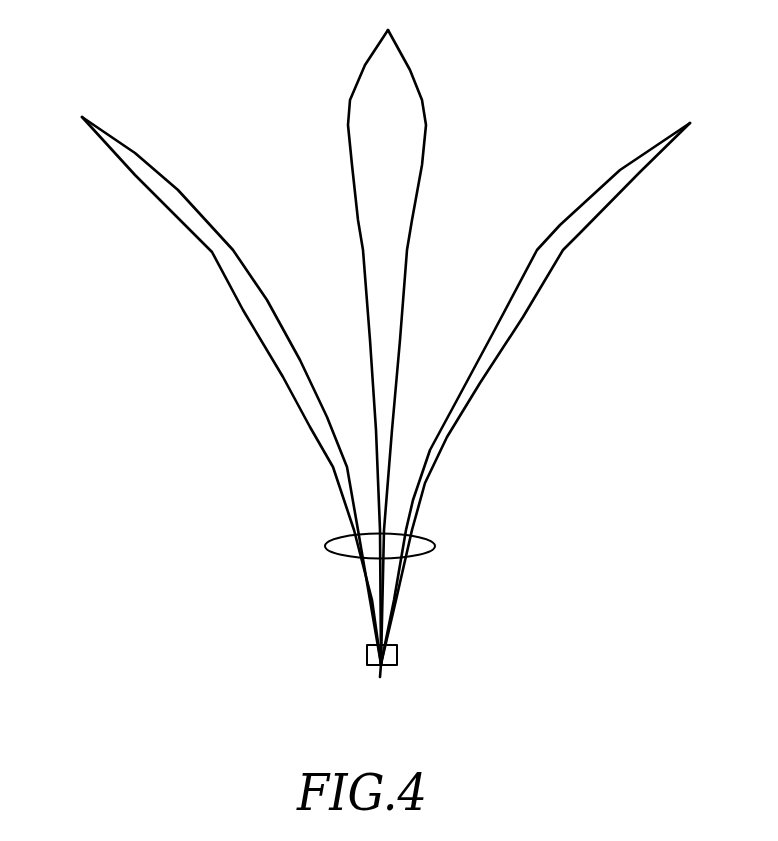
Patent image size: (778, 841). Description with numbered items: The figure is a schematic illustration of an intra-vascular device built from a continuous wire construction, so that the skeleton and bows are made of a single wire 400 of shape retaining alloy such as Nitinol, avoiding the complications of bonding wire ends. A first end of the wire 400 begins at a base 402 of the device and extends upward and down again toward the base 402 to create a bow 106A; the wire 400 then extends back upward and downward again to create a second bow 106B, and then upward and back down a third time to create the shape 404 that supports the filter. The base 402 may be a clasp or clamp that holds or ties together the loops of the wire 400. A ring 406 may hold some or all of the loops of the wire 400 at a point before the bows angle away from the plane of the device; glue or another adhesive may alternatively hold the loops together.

The continuous wire 400 is at (389, 347).
The base 402 is at (407, 653).
The shape that supports filter 404 is at (404, 52).
The ring 406 is at (410, 541).
The bow 106A is at (135, 176).
The bow 106B is at (637, 178).